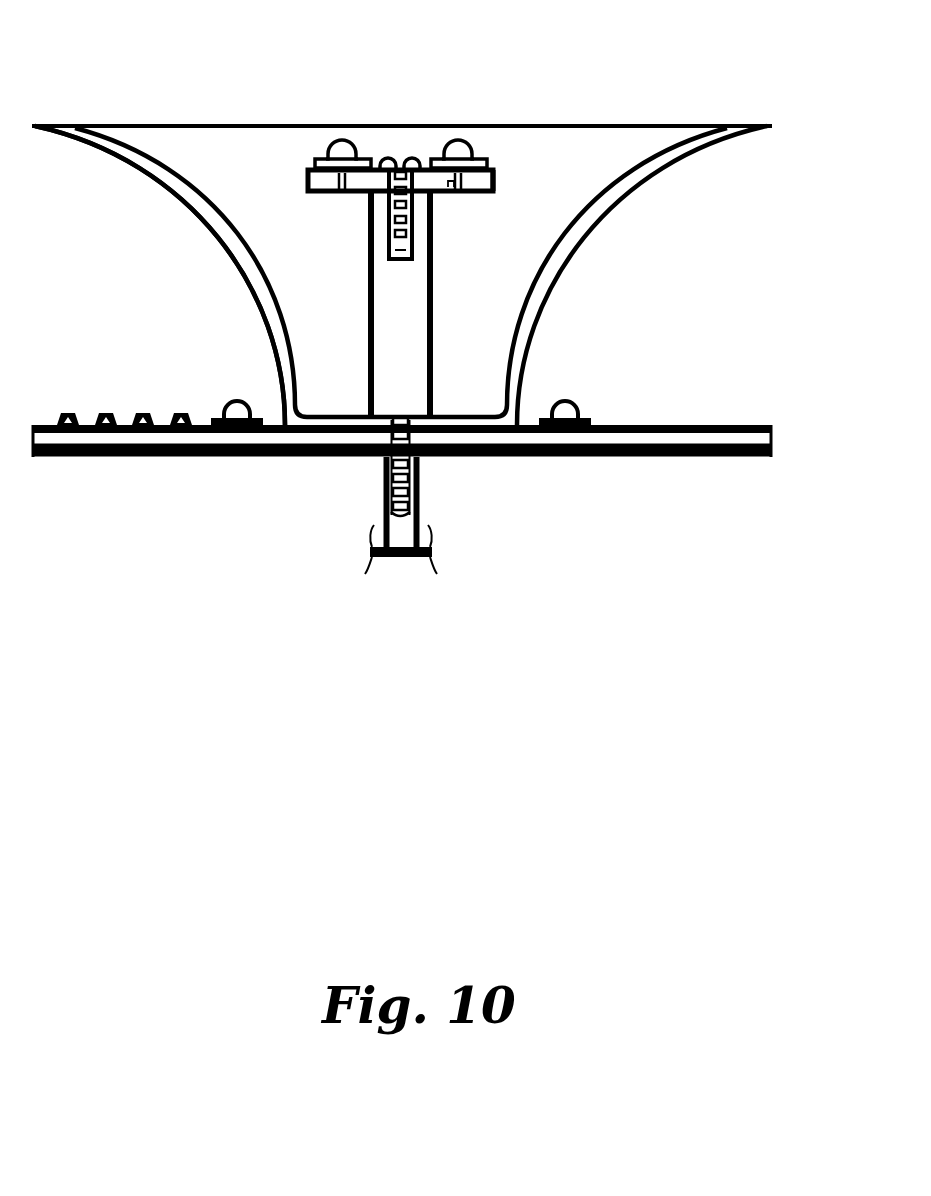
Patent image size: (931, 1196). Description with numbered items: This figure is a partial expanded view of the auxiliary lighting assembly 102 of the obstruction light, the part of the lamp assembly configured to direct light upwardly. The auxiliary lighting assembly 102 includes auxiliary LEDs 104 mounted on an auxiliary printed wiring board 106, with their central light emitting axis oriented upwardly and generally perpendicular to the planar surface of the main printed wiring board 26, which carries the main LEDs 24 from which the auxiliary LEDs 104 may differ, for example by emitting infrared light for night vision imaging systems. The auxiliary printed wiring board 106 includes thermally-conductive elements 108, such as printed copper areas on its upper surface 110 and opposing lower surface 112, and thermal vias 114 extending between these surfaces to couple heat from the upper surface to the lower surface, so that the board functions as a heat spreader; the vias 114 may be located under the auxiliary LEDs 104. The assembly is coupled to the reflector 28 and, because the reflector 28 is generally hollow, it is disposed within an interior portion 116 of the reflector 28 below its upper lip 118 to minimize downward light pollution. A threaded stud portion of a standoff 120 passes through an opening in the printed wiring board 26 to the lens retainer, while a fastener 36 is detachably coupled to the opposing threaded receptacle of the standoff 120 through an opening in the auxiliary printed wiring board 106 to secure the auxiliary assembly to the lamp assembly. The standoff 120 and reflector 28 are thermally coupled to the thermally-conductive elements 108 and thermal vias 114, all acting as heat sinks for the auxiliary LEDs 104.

The auxiliary lighting assembly 102 is at (184, 23).
The upper lip 118 is at (166, 126).
The reflector 28 is at (658, 165).
The standoff 120 is at (538, 292).
The interior portion 116 is at (309, 315).
The auxiliary printed wiring board 106 is at (307, 178).
The thermally-conductive elements 108 is at (494, 178).
The upper surface 110 is at (311, 167).
The lower surface 112 is at (353, 195).
The thermal vias 114 is at (452, 189).
The auxiliary LEDs 104 is at (342, 146).
The fastener 36 is at (396, 158).
The LEDs 24 is at (236, 404).
The printed wiring board 26 is at (762, 440).